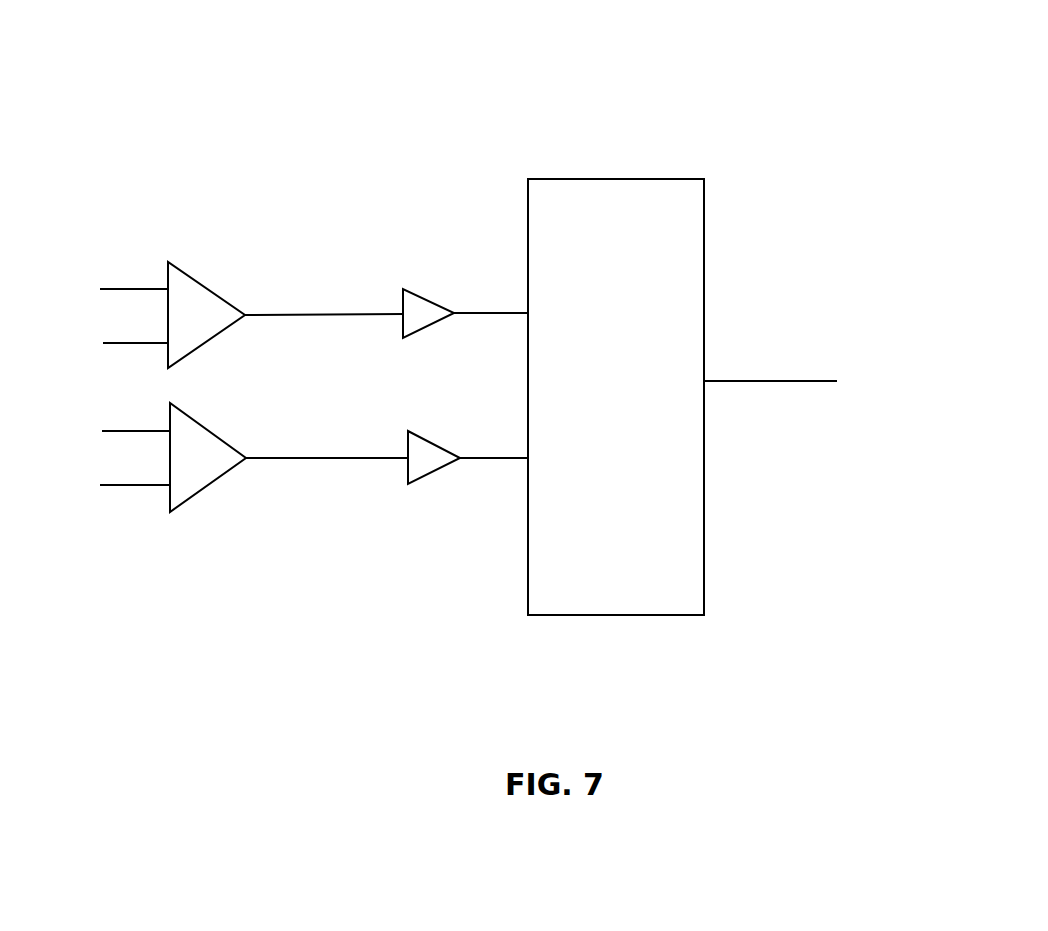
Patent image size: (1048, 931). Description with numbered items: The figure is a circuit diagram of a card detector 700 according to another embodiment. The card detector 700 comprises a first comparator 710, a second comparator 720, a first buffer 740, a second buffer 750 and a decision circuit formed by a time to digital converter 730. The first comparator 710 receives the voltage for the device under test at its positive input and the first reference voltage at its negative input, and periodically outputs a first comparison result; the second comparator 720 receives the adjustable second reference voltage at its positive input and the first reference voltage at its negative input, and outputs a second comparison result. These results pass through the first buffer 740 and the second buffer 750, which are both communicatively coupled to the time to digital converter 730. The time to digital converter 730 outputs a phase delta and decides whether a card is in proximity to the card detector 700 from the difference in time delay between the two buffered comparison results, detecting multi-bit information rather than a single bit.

The card detector 700 is at (895, 83).
The first comparator 710 is at (197, 283).
The second comparator 720 is at (199, 424).
The time to digital converter (TDC) 730 is at (704, 273).
The first buffer 740 is at (425, 290).
The second buffer 750 is at (415, 432).